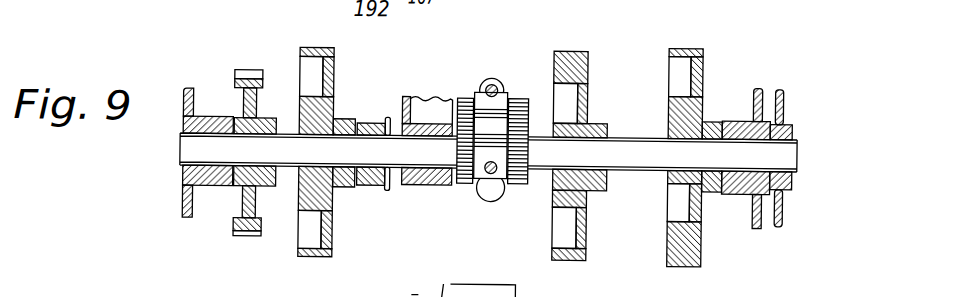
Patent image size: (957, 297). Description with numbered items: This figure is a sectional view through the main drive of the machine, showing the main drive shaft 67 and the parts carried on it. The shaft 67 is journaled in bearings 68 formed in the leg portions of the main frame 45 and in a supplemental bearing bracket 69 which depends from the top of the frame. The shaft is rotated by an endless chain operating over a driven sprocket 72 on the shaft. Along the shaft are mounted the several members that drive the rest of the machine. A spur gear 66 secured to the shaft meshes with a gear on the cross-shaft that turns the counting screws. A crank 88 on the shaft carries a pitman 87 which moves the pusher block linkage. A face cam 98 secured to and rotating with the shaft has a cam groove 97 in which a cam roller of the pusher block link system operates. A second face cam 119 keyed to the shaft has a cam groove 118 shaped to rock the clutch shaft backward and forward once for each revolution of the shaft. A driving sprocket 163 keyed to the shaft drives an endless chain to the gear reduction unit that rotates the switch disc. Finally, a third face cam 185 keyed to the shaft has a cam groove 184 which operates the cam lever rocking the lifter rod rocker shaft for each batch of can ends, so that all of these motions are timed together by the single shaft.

The main frame 45 is at (183, 198).
The spur gear 66 is at (245, 85).
The main drive shaft 67 is at (190, 150).
The bearings 68 is at (207, 116).
The supplemental bearing bracket 69 is at (428, 172).
The driven sprocket 72 is at (782, 205).
The pitman 87 is at (482, 94).
The crank 88 is at (492, 118).
The cam groove 97 is at (563, 77).
The face cam 98 is at (588, 134).
The cam groove 118 is at (708, 136).
The face cam 119 is at (702, 82).
The driving sprocket 163 is at (372, 176).
The cam groove 184 is at (329, 132).
The face cam 185 is at (328, 71).